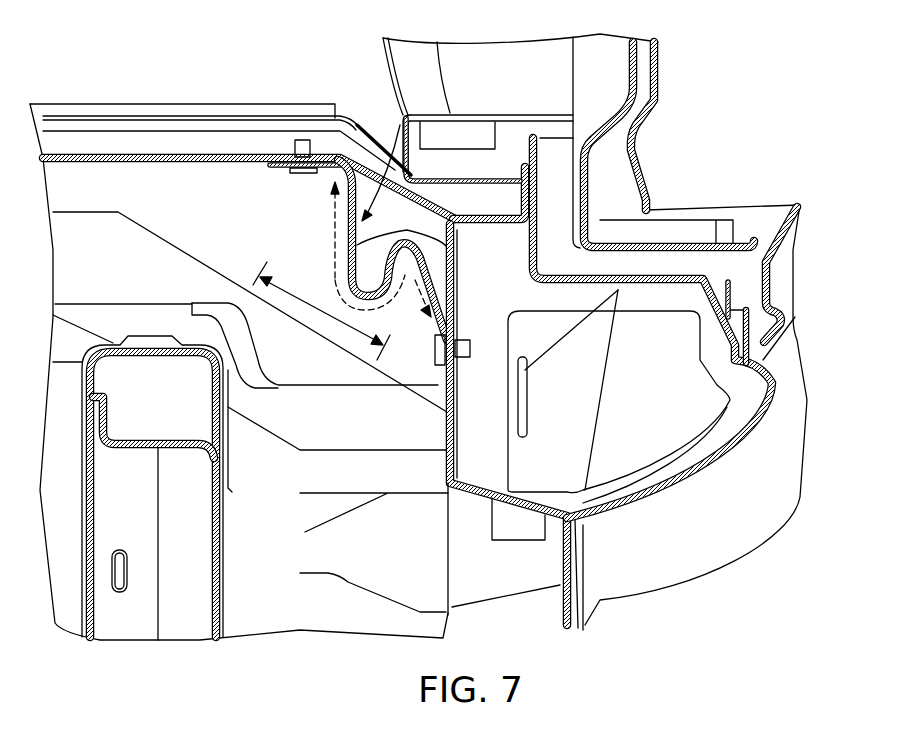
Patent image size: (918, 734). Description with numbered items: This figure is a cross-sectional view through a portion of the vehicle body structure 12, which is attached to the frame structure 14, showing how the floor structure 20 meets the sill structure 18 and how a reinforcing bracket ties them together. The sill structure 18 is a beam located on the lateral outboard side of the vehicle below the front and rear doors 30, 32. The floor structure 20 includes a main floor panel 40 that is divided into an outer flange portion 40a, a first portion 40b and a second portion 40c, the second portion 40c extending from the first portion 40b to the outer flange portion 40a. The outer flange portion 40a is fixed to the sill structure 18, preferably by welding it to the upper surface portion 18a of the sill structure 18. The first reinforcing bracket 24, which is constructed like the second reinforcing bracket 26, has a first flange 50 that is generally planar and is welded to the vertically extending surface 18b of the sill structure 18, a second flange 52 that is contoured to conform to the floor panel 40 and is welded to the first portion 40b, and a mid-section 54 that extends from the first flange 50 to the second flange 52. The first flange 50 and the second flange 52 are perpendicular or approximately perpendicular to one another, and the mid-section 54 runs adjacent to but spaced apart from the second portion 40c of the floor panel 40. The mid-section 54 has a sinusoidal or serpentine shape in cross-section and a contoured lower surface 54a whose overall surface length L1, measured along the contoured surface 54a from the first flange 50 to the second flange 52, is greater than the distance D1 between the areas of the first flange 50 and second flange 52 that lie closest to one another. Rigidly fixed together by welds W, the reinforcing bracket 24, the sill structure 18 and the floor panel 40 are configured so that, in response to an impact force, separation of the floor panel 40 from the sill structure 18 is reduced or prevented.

The vehicle body structure 12 is at (683, 68).
The frame structure 14 is at (125, 613).
The sill structure 18 is at (486, 490).
The upper surface portion 18a is at (490, 213).
The vertically extending surface 18b is at (446, 435).
The floor structure 20 is at (182, 104).
The first reinforcing bracket 24 is at (356, 117).
The second reinforcing bracket 26 is at (358, 124).
The front door 30 is at (690, 171).
The rear door 32 is at (598, 55).
The main floor panel 40 is at (114, 130).
The outer flange portion 40a is at (437, 214).
The first portion 40b is at (203, 154).
The second portion 40c is at (416, 116).
The first flange 50 is at (440, 372).
The second flange 52 is at (322, 185).
The mid-section 54 is at (455, 247).
The contoured lower surface 54a is at (347, 240).
The welds W is at (296, 148).
The overall surface length L1 is at (333, 268).
The distance D1 is at (321, 311).